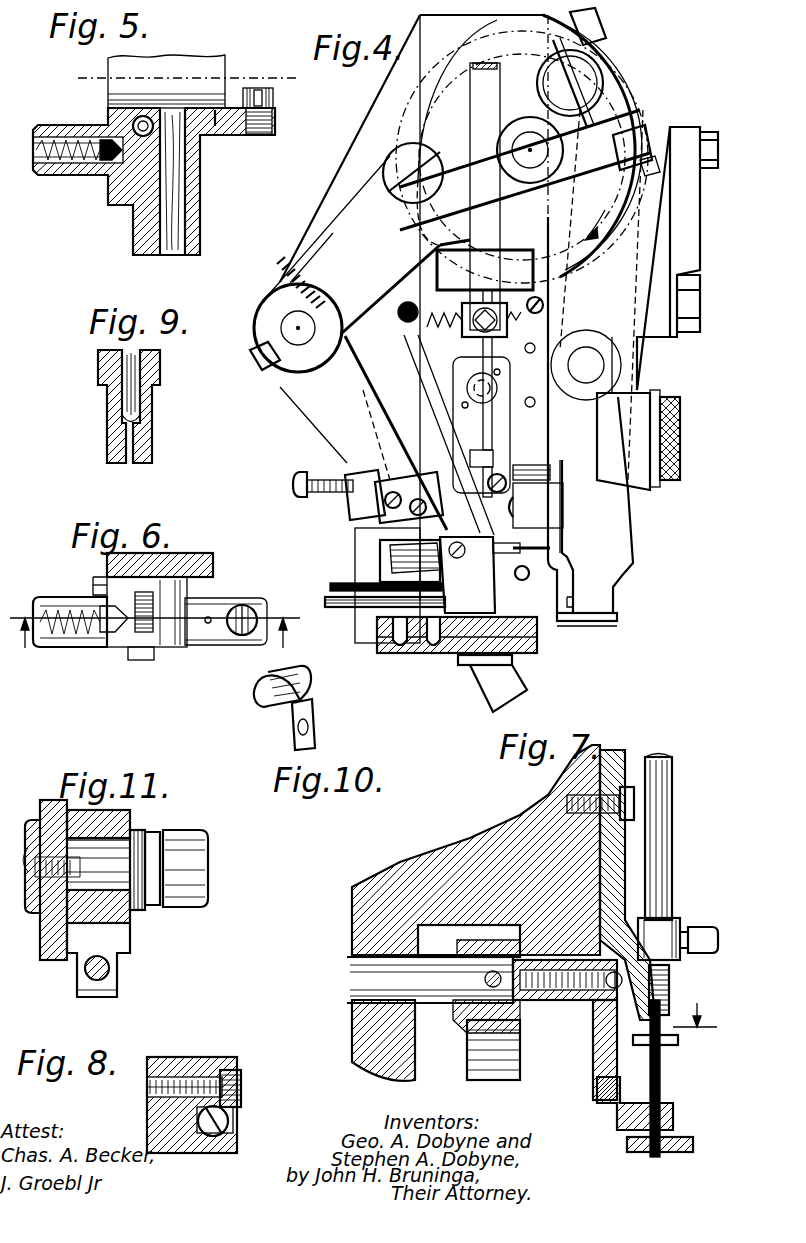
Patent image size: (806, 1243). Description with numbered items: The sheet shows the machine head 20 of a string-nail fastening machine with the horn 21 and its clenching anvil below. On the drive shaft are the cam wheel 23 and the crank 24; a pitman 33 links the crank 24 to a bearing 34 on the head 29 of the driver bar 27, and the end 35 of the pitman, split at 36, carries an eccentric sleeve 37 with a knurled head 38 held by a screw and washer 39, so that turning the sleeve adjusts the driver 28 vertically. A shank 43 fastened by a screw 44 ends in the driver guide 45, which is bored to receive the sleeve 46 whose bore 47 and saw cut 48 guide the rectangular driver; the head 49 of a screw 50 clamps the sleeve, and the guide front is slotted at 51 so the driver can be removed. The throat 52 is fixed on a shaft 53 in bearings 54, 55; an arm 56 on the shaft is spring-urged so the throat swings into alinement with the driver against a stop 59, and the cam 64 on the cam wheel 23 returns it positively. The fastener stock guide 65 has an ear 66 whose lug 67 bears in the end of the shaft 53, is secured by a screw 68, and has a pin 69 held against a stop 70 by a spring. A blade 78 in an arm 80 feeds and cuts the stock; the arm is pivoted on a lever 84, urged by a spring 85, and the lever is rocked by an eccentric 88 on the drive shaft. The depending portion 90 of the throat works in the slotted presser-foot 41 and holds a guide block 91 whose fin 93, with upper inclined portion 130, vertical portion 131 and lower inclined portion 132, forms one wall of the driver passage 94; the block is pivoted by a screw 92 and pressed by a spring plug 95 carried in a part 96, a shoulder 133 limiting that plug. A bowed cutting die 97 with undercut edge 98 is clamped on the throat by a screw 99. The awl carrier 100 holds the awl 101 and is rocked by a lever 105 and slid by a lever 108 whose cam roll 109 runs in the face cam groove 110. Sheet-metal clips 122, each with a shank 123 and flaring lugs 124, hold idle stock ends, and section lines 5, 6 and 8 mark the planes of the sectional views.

In FIG. 6, the section line 5— 5 is at (155, 646).
In FIG. 5, the section line 6— 6 is at (184, 80).
In FIG. 7, the section line 8 is at (695, 1004).
In FIG. 7, the machine head 20 is at (533, 828).
In FIG. 4, the horn 21 is at (492, 683).
In FIG. 4, the cam wheel 23 is at (630, 84).
In FIG. 4, the crank 24 is at (630, 122).
In FIG. 7, the driver bar 27 is at (660, 867).
In FIG. 8, the driver 28 is at (234, 1108).
In FIG. 7, the driver 28 is at (657, 1060).
In FIG. 4, the driver 28 is at (505, 360).
In FIG. 11, the head 29 is at (193, 836).
In FIG. 11, the pitman 33 is at (117, 993).
In FIG. 4, the pitman 33 is at (533, 27).
In FIG. 11, the bearing 34 is at (140, 832).
In FIG. 11, the end of the pitman 35 is at (130, 812).
In FIG. 11, the split 36 is at (120, 934).
In FIG. 11, the eccentric sleeve 37 is at (118, 913).
In FIG. 11, the knurled head 38 is at (53, 960).
In FIG. 11, the screw and washer 39 is at (33, 914).
In FIG. 7, the presser-foot 41 is at (633, 1147).
In FIG. 4, the presser-foot 41 is at (560, 620).
In FIG. 7, the shank 43 is at (607, 780).
In FIG. 4, the shank 43 is at (493, 417).
In FIG. 7, the screw 44 is at (628, 788).
In FIG. 8, the driver guide 45 is at (207, 1153).
In FIG. 7, the driver guide 45 is at (640, 1020).
In FIG. 9, the sleeve 46 is at (100, 365).
In FIG. 8, the sleeve 46 is at (195, 1124).
In FIG. 7, the sleeve 46 is at (668, 1003).
In FIG. 9, the bore 47 is at (134, 373).
In FIG. 9, the saw cut 48 is at (132, 446).
In FIG. 8, the head 49 is at (241, 1074).
In FIG. 8, the screw 50 is at (190, 1095).
In FIG. 8, the slot 51 is at (230, 1121).
In FIG. 5, the throat 52 is at (205, 170).
In FIG. 6, the throat 52 is at (100, 600).
In FIG. 7, the throat 52 is at (630, 1103).
In FIG. 4, the throat 52 is at (423, 654).
In FIG. 7, the shaft 53 is at (430, 980).
In FIG. 7, the bearing 54 is at (553, 1005).
In FIG. 7, the bearing 55 is at (392, 1007).
In FIG. 7, the arm 56 is at (493, 1067).
In FIG. 4, the stop 59 is at (512, 517).
In FIG. 4, the cam 64 is at (610, 50).
In FIG. 4, the fastener stock guide 65 is at (460, 488).
In FIG. 7, the ear 66 is at (647, 933).
In FIG. 7, the lug 67 is at (580, 1020).
In FIG. 7, the screw 68 is at (527, 1017).
In FIG. 4, the arm or pin 69 is at (314, 357).
In FIG. 4, the stop 70 is at (483, 355).
In FIG. 4, the blade 78 is at (455, 533).
In FIG. 4, the arm 80 is at (363, 433).
In FIG. 4, the lever 84 is at (340, 238).
In FIG. 4, the spring 85 is at (330, 230).
In FIG. 4, the eccentric 88 is at (493, 184).
In FIG. 5, the depending portion 90 is at (198, 240).
In FIG. 7, the depending portion 90 is at (661, 1140).
In FIG. 5, the block or guide member 91 is at (135, 207).
In FIG. 5, the pivot screw 92 is at (152, 104).
In FIG. 6, the pivot screw 92 is at (150, 630).
In FIG. 5, the fin 93 is at (172, 250).
In FIG. 5, the driver passage 94 is at (177, 190).
In FIG. 5, the spring pressed plug 95 is at (98, 176).
In FIG. 6, the spring pressed plug 95 is at (102, 640).
In FIG. 5, the part 96 is at (58, 176).
In FIG. 6, the part 96 is at (62, 642).
In FIG. 5, the cutting die 97 is at (276, 112).
In FIG. 6, the cutting die 97 is at (220, 633).
In FIG. 5, the beveled cutting edge 98 is at (205, 100).
In FIG. 5, the screw 99 is at (265, 88).
In FIG. 6, the screw 99 is at (238, 608).
In FIG. 4, the awl carrier 100 is at (557, 627).
In FIG. 4, the awl 101 is at (557, 633).
In FIG. 4, the lever 105 is at (634, 365).
In FIG. 4, the lever 108 is at (631, 565).
In FIG. 4, the cam roll 109 is at (650, 218).
In FIG. 4, the face cam groove 110 is at (650, 235).
In FIG. 10, the clip 122 is at (308, 690).
In FIG. 10, the shank 123 is at (313, 727).
In FIG. 10, the lugs 124 is at (267, 698).
In FIG. 5, the upper inclined portion 130 is at (187, 97).
In FIG. 5, the intermediate vertical portion 131 is at (180, 165).
In FIG. 5, the lower inclined portion 132 is at (172, 225).
In FIG. 6, the shoulder 133 is at (212, 555).